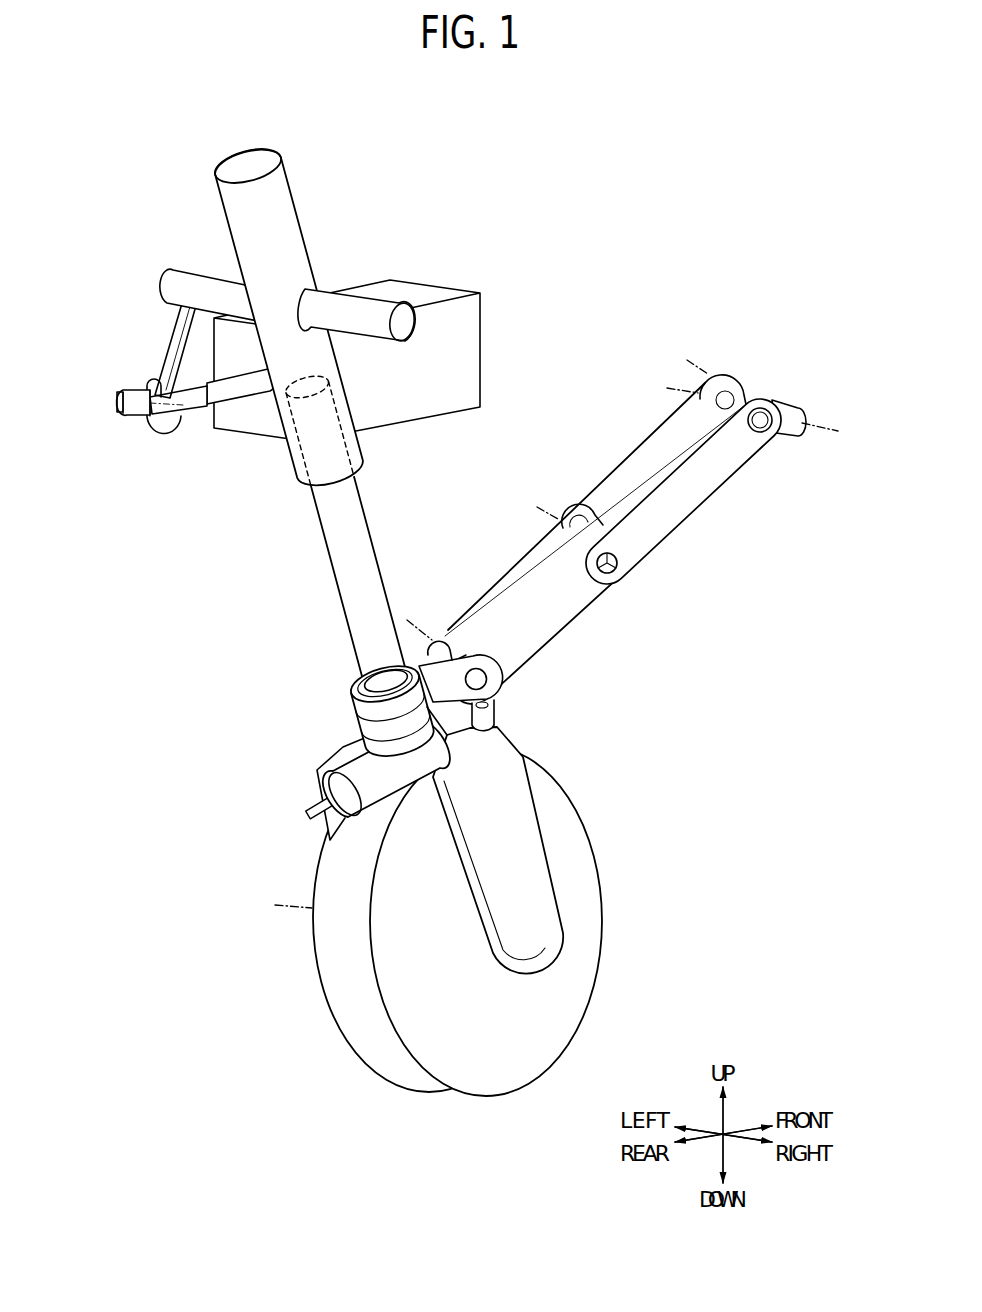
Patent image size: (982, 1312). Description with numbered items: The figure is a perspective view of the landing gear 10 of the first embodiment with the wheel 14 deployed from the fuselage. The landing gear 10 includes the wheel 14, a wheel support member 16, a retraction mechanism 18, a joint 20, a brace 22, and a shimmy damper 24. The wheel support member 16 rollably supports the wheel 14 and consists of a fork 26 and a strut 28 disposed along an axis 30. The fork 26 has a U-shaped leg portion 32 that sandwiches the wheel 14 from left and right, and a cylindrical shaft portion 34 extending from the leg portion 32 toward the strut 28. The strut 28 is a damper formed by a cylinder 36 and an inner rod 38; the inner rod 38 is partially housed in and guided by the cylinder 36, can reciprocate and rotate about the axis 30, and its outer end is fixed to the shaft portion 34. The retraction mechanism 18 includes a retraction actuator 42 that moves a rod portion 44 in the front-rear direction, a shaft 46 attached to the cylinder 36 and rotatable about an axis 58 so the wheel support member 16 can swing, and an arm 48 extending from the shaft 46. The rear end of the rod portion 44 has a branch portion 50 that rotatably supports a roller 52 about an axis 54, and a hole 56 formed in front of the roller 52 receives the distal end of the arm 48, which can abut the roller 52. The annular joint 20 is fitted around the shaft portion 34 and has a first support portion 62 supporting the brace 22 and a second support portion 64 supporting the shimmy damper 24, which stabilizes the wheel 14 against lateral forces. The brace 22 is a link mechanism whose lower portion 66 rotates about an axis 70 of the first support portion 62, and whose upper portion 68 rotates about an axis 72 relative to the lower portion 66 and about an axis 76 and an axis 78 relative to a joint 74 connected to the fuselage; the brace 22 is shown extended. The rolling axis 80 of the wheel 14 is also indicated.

The landing gear 10 is at (480, 165).
The wheel 14 is at (360, 1030).
The wheel support member 16 is at (186, 550).
The retraction mechanism 18 is at (183, 256).
The joint 20 is at (362, 680).
The brace 22 is at (572, 492).
The shimmy damper 24 is at (398, 792).
The fork 26 is at (232, 662).
The strut 28 is at (232, 522).
The axis 30 is at (246, 162).
The leg portion 32 is at (345, 750).
The shaft portion 34 is at (355, 688).
The cylinder 36 is at (287, 378).
The inner rod 38 is at (357, 577).
The retraction actuator 42 is at (420, 403).
The rod portion 44 is at (228, 386).
The shaft 46 is at (358, 306).
The arm 48 is at (186, 330).
The branch portion 50 is at (196, 412).
The roller 52 is at (132, 414).
The axis 54 is at (117, 398).
The hole 56 is at (148, 386).
The axis 58 is at (162, 287).
The first support portion 62 is at (438, 641).
The second support portion 64 is at (507, 747).
The lower portion 66 is at (537, 620).
The upper portion 68 is at (653, 518).
The axis 70 is at (490, 690).
The axis 72 is at (620, 575).
The joint 74 is at (785, 410).
The axis 76 is at (770, 434).
The axis 78 is at (833, 431).
The rolling axis 80 is at (532, 930).